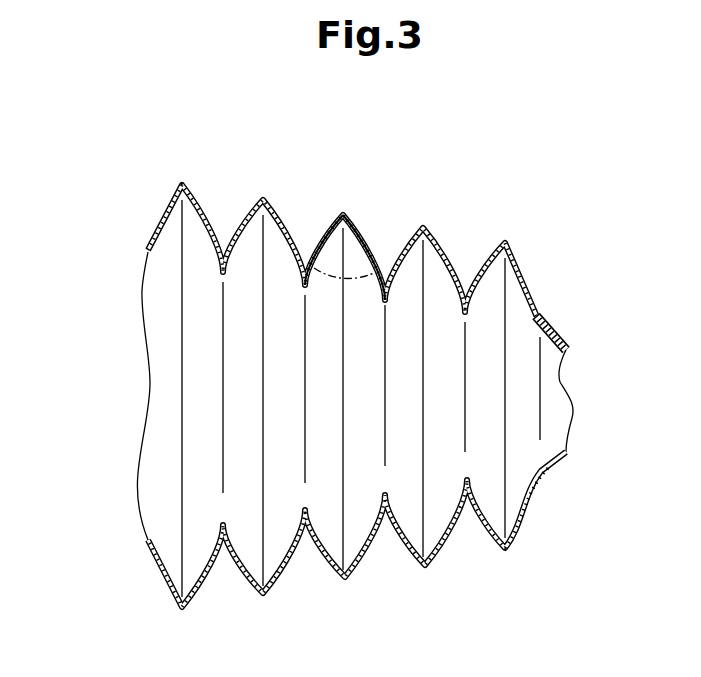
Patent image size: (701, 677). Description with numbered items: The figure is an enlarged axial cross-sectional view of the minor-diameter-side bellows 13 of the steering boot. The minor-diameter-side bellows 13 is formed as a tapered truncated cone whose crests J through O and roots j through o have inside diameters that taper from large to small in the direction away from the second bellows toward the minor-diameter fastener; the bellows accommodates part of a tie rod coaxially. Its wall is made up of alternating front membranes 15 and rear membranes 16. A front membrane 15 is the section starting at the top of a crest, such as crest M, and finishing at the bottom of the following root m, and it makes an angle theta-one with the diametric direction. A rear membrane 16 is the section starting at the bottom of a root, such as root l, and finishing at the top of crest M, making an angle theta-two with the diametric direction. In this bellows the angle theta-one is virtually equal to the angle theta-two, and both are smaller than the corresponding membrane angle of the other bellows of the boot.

The minor-diameter-side bellows 13 is at (468, 577).
The front membrane 15 is at (367, 240).
The rear membrane 16 is at (325, 237).